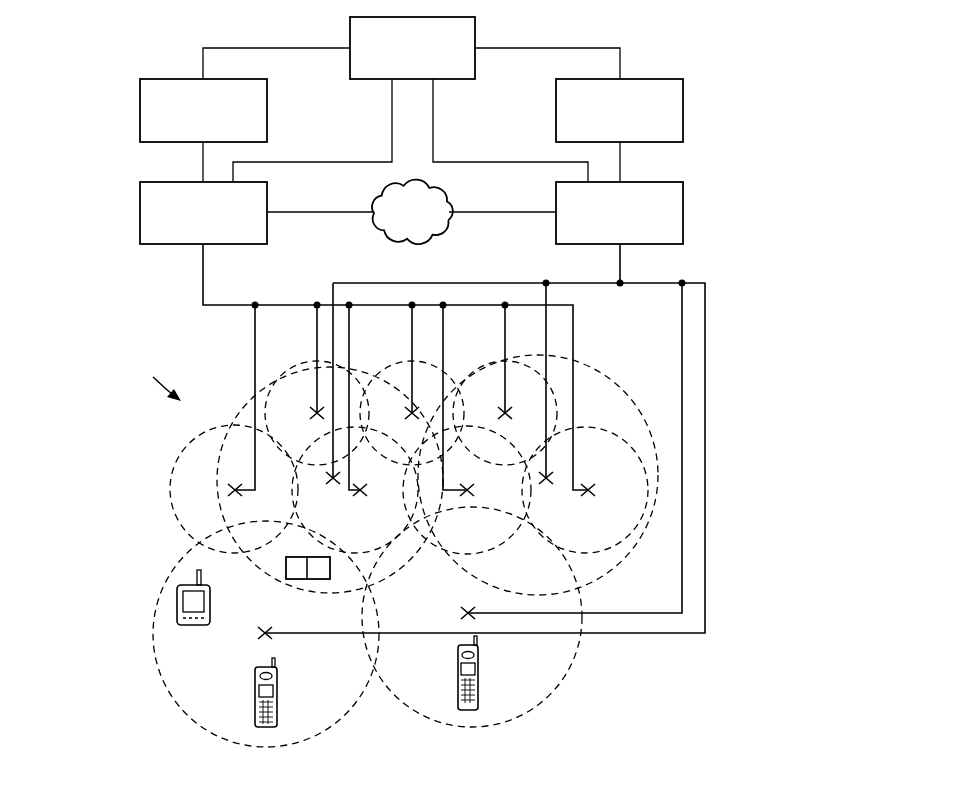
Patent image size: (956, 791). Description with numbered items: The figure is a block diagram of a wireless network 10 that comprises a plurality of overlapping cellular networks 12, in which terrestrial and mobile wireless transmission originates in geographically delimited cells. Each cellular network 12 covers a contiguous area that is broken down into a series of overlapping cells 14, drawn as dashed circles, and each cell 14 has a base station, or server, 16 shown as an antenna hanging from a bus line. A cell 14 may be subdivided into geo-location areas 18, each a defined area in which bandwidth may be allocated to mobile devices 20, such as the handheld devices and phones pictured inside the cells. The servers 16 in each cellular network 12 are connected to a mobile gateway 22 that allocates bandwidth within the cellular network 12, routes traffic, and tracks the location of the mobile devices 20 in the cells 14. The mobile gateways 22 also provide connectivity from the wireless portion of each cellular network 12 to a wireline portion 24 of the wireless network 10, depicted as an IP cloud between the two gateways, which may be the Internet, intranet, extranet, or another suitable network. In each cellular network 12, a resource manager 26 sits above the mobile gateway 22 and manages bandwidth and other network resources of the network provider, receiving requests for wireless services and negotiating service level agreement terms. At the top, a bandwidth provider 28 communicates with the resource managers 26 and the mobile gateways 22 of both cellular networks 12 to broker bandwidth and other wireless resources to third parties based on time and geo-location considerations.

The wireless network 10 is at (780, 337).
The cellular network 12 is at (134, 63).
The overlapping cell 14 is at (300, 365).
The base station 16 is at (508, 408).
The geo-location area 18 is at (317, 580).
The mobile device 20 is at (212, 601).
The mobile gateway 22 is at (140, 210).
The wireline portion 24 is at (382, 234).
The resource manager 26 is at (140, 106).
The bandwidth provider 28 is at (476, 32).